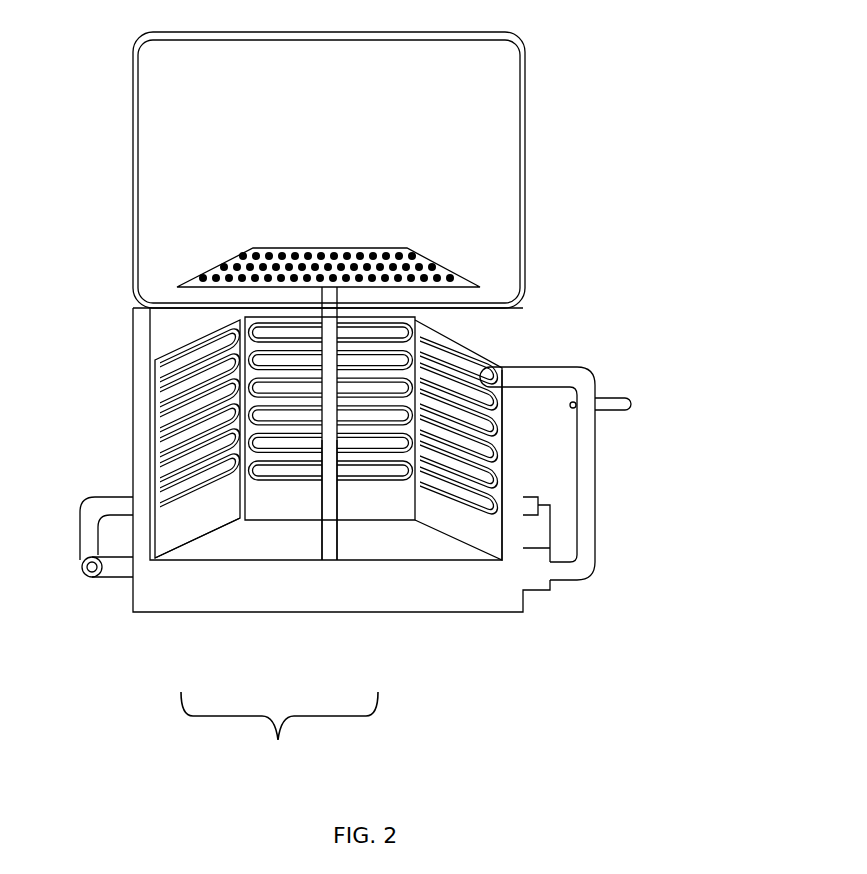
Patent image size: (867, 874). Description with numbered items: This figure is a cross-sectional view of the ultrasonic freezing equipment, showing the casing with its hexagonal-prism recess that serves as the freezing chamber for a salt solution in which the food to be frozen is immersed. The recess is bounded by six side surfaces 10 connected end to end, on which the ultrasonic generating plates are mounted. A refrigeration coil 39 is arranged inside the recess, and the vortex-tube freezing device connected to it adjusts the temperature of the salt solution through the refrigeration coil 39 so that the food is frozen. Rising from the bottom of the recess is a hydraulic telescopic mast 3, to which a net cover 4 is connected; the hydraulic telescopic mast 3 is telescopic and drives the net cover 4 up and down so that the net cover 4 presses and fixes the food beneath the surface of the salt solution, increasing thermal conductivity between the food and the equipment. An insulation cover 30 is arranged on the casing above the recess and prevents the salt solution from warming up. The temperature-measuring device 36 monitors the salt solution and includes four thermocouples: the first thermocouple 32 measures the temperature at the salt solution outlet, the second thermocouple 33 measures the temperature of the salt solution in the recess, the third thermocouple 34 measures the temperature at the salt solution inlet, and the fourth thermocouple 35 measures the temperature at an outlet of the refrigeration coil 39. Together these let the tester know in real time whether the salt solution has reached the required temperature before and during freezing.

The insulation cover 30 is at (412, 142).
The net cover 4 is at (412, 262).
The hydraulic telescopic mast 3 is at (323, 337).
The side surfaces 10 is at (470, 532).
The refrigeration coil 39 is at (190, 445).
The first thermocouple 32 is at (133, 566).
The fourth thermocouple 35 is at (162, 532).
The second thermocouple 33 is at (328, 442).
The third thermocouple 34 is at (495, 370).
The temperature-measuring device 36 is at (279, 733).